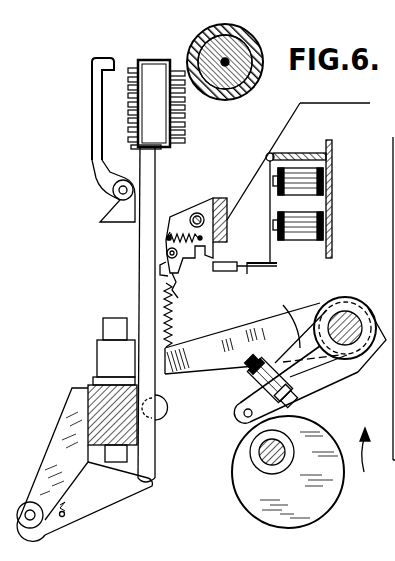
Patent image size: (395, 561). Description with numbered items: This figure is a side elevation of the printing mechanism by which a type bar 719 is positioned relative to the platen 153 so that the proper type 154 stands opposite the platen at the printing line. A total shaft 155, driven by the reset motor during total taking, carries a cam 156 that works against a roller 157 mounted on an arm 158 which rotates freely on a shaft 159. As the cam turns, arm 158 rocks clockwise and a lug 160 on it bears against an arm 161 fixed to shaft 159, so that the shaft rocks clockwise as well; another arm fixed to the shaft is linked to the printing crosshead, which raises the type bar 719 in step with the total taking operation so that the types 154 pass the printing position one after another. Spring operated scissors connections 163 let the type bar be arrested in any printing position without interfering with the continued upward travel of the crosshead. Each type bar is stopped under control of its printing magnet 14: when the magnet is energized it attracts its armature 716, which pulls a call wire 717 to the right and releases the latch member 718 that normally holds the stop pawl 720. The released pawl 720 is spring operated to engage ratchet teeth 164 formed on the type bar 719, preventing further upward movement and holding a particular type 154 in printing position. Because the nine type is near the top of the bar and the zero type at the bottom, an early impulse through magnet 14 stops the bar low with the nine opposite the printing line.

The printing magnet 14 is at (305, 234).
The platen 153 is at (239, 32).
The type 154 is at (186, 120).
The total shaft 155 is at (258, 452).
The cam 156 is at (260, 500).
The roller 157 is at (242, 420).
The arm 158 is at (320, 376).
The shaft 159 is at (350, 315).
The lug 160 is at (294, 390).
The arm 161 is at (256, 331).
The spring operated scissors connections 163 is at (78, 510).
The ratchet teeth 164 is at (169, 312).
The armature 716 is at (272, 256).
The call wire 717 is at (250, 272).
The latch member 718 is at (220, 248).
The type bar 719 is at (151, 178).
The stop pawl 720 is at (172, 272).